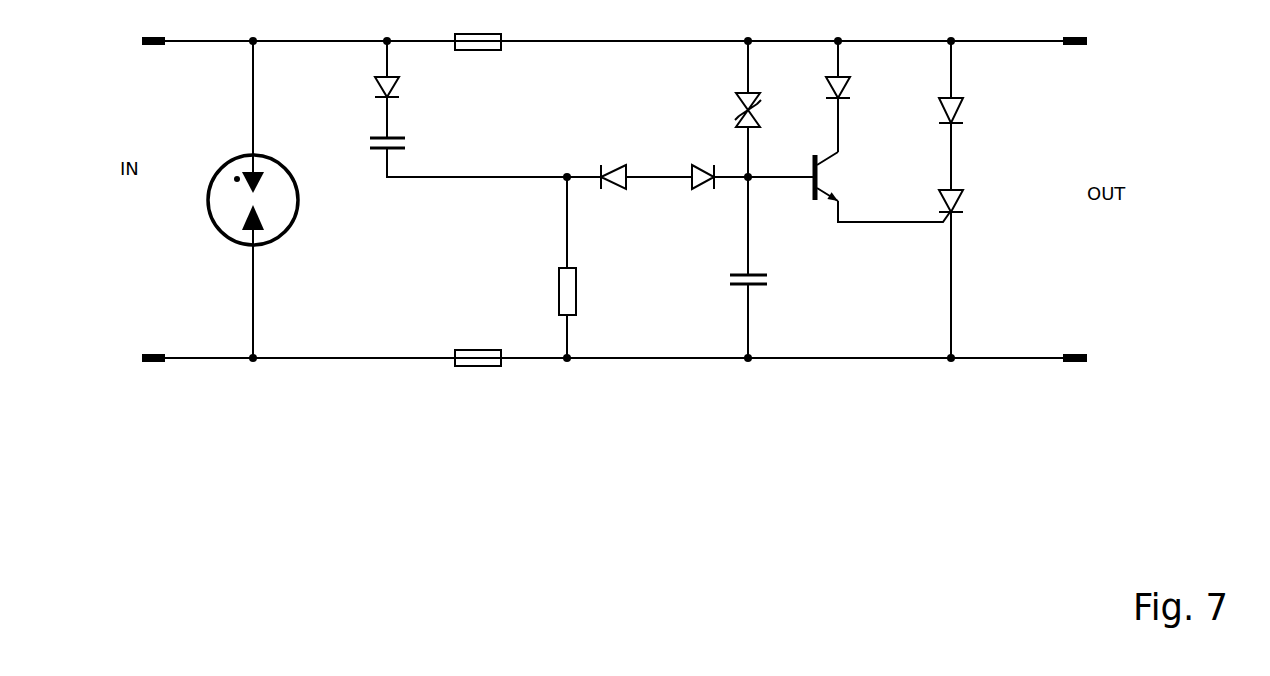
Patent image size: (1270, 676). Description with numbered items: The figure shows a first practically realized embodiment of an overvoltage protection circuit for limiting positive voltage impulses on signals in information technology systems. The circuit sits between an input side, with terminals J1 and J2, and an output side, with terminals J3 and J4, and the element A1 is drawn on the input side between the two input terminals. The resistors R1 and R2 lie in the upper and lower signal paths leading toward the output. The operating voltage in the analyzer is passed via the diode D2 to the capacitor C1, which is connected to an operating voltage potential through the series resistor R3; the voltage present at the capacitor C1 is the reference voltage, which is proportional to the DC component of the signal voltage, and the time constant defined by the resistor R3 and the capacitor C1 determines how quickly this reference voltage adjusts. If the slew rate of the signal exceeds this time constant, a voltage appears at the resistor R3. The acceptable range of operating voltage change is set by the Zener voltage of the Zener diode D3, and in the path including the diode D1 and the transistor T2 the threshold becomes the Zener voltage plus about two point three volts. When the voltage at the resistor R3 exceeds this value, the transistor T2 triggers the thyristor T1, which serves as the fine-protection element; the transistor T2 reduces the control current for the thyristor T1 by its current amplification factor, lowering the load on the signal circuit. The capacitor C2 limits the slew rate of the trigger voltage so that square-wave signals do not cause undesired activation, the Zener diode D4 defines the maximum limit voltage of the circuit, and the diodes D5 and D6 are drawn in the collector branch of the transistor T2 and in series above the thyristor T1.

The input terminal J1 is at (153, 25).
The input terminal J2 is at (153, 341).
The output terminal J3 is at (1075, 30).
The output terminal J4 is at (1075, 347).
The current source / surge arrester A1 is at (241, 194).
The resistor R1 is at (473, 30).
The resistor R2 is at (473, 348).
The resistor R3 is at (551, 281).
The diode D1 is at (699, 162).
The diode D2 is at (368, 84).
The Zener diode D3 is at (604, 162).
The Zener diode D4 is at (734, 106).
The diode D5 is at (824, 76).
The diode D6 is at (938, 99).
The capacitor C1 is at (369, 140).
The capacitor C2 is at (734, 265).
The thyristor T1 is at (939, 186).
The transistor T2 is at (816, 163).